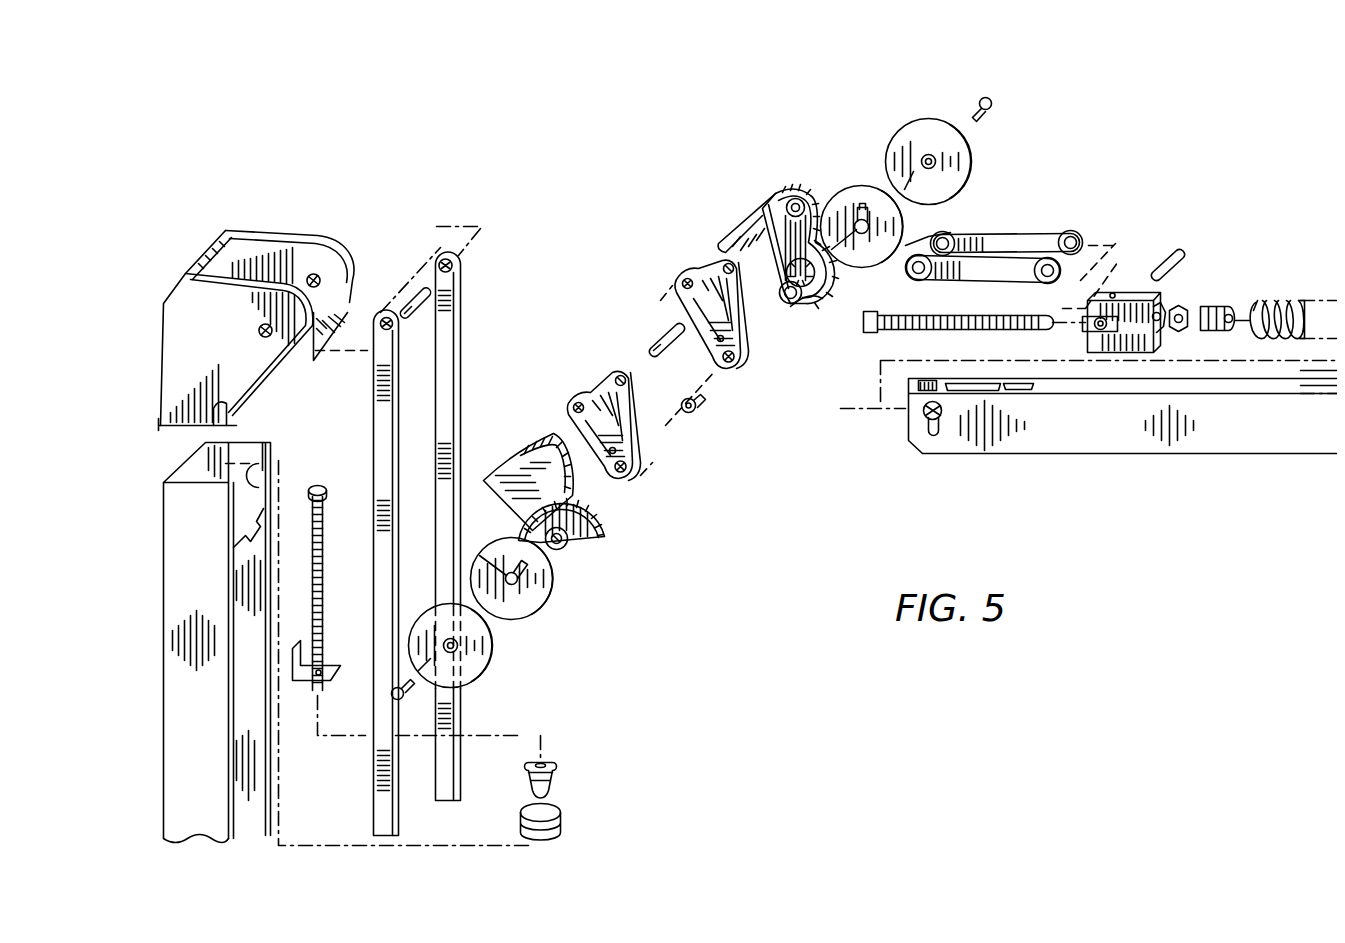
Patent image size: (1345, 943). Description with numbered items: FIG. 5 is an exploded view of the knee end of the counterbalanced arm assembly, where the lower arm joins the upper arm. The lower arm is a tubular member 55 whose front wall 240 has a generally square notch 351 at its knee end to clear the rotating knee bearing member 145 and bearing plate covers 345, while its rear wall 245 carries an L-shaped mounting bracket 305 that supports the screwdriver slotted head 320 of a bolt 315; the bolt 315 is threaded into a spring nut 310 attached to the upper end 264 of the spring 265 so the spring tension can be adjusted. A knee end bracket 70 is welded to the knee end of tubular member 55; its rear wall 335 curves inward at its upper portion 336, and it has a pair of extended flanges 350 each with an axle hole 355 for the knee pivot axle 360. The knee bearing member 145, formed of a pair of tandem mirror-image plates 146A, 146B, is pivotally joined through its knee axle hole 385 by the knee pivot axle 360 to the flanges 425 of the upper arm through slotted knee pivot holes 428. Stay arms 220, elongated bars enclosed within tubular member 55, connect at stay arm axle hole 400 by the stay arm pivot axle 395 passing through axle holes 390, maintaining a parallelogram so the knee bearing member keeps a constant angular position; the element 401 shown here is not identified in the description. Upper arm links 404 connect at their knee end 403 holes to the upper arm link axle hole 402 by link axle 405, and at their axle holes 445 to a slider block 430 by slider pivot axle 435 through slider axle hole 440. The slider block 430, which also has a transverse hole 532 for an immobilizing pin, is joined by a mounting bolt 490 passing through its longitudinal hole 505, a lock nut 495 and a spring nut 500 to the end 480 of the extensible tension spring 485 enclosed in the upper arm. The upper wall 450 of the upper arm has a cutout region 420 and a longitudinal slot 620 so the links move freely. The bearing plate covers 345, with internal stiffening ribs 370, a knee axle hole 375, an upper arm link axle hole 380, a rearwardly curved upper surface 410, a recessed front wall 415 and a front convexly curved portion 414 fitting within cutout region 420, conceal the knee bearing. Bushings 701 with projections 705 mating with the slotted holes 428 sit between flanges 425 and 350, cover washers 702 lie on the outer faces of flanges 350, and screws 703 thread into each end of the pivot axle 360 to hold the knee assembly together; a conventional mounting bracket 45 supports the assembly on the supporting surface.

The upper portion 336 is at (208, 248).
The axle hole 355 is at (313, 274).
The extended flanges 350 is at (336, 362).
The knee end bracket 70 is at (207, 415).
The rear wall 335 is at (200, 430).
The stay arm axle hole 400 is at (403, 255).
The stay arms 220 is at (447, 345).
The pivot axis 401 is at (418, 252).
The stay arm pivot axle 395 is at (404, 306).
The rear wall 245 is at (190, 482).
The square notch 351 is at (268, 450).
The tubular member 55 is at (205, 761).
The front wall 240 is at (270, 818).
The screwdriver slotted head 320 is at (320, 484).
The bolt 315 is at (330, 608).
The L-shaped mounting bracket 305 is at (345, 655).
The cover washers 702 is at (480, 660).
The bushings 701 is at (541, 605).
The projections 705 is at (490, 570).
The screws 703 is at (410, 692).
The rearwardly curved upper surface 410 is at (520, 460).
The front wall 415 is at (575, 508).
The knee axle hole 375 is at (560, 546).
The bearing plate covers 345 is at (592, 546).
The front convexly curved portion 414 is at (610, 540).
The axle holes 390 is at (576, 400).
The upper arm link axle hole 402 is at (616, 373).
The mirror-image plate 146A is at (636, 400).
The mirror-image plate 146B is at (748, 366).
The knee axle hole 385 is at (640, 455).
The knee bearing member 145 is at (638, 497).
The knee pivot axle 360 is at (700, 415).
The link axle 405 is at (662, 330).
The upper arm link axle hole 380 is at (780, 193).
The internal stiffening ribs 370 is at (778, 262).
The mounting bracket 45 is at (812, 300).
The upper arm links 404 is at (990, 258).
The axle holes 445 is at (1068, 232).
The knee end 403 is at (905, 250).
The mounting bolt 490 is at (970, 330).
The cutout region 420 is at (928, 380).
The flanges 425 is at (940, 384).
The upper wall 450 is at (1255, 395).
The slotted knee pivot holes 428 is at (940, 428).
The longitudinal slot 620 is at (1002, 392).
The slider block 430 is at (1140, 345).
The transverse hole 532 is at (1112, 292).
The slider axle hole 440 is at (1085, 328).
The longitudinal hole 505 is at (1160, 330).
The slider pivot axle 435 is at (1165, 256).
The lock nut 495 is at (1180, 306).
The spring nut 500 is at (1226, 305).
The extensible tension spring 485 is at (1270, 302).
The end 480 is at (1252, 320).
The spring nut 310 is at (555, 768).
The upper end 264 is at (562, 808).
The spring 265 is at (565, 828).